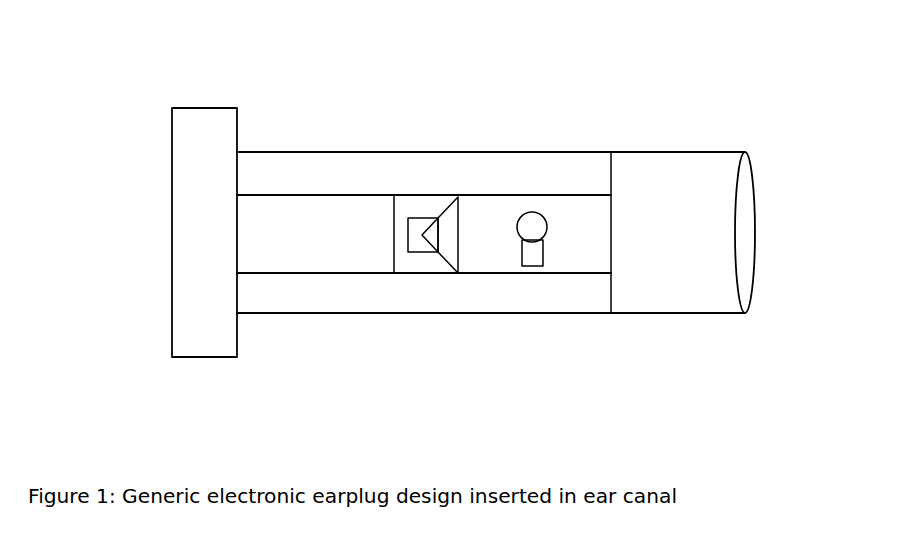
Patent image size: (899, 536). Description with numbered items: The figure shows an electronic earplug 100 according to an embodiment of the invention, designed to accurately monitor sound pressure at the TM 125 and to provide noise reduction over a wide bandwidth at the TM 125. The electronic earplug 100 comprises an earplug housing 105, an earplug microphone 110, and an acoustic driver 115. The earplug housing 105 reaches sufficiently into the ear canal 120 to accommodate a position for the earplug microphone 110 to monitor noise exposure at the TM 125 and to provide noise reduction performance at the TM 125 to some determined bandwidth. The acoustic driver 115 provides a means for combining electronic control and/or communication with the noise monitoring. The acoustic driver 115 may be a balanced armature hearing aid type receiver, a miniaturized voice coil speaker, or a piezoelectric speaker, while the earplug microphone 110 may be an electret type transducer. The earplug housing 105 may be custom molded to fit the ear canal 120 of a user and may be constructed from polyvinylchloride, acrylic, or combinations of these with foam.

The electronic earplug 100 is at (162, 188).
The earplug housing 105 is at (424, 279).
The earplug microphone 110 is at (589, 315).
The acoustic driver 115 is at (465, 177).
The ear canal 120 is at (699, 253).
The TM 125 is at (785, 197).